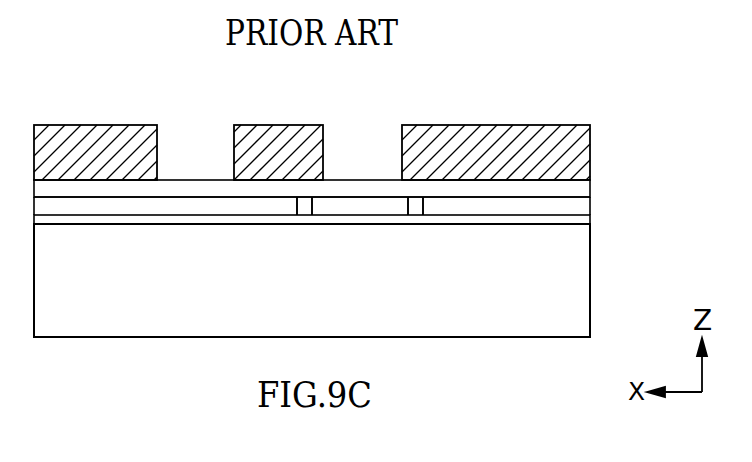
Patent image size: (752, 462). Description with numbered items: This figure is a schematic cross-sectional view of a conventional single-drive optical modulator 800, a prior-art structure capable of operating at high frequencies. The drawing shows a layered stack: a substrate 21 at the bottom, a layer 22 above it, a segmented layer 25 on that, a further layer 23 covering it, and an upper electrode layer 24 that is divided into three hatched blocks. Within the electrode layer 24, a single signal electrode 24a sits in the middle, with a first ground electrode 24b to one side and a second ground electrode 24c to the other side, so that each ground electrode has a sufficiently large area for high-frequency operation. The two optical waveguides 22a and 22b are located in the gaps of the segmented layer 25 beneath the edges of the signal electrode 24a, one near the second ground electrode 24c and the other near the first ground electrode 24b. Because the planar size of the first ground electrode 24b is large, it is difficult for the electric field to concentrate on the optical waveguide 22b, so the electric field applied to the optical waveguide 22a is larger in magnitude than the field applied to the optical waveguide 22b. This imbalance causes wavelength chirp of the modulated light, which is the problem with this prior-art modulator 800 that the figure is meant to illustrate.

The prior art light emitting device 800 is at (558, 43).
The substrate 21 is at (590, 280).
The first layer 22 is at (590, 220).
The optical waveguide 22a is at (297, 205).
The optical waveguide 22b is at (425, 205).
The third layer 23 is at (590, 187).
The electrode layer 24 is at (339, 127).
The signal electrode 24a is at (307, 123).
The first ground electrode 24b is at (545, 123).
The second ground electrode 24c is at (80, 123).
The second layer segments 25 is at (590, 208).